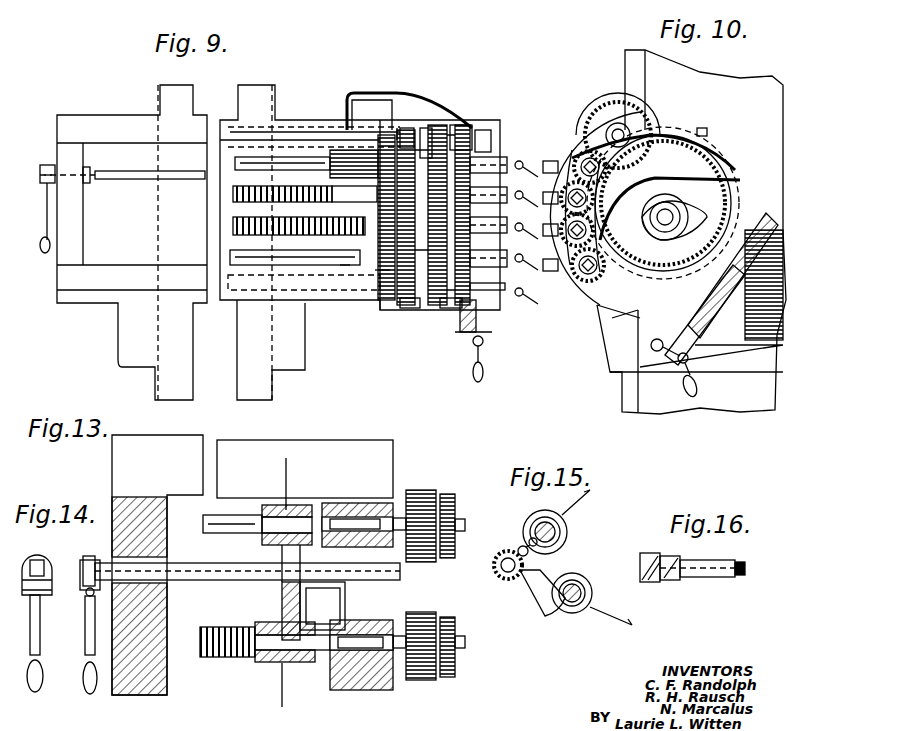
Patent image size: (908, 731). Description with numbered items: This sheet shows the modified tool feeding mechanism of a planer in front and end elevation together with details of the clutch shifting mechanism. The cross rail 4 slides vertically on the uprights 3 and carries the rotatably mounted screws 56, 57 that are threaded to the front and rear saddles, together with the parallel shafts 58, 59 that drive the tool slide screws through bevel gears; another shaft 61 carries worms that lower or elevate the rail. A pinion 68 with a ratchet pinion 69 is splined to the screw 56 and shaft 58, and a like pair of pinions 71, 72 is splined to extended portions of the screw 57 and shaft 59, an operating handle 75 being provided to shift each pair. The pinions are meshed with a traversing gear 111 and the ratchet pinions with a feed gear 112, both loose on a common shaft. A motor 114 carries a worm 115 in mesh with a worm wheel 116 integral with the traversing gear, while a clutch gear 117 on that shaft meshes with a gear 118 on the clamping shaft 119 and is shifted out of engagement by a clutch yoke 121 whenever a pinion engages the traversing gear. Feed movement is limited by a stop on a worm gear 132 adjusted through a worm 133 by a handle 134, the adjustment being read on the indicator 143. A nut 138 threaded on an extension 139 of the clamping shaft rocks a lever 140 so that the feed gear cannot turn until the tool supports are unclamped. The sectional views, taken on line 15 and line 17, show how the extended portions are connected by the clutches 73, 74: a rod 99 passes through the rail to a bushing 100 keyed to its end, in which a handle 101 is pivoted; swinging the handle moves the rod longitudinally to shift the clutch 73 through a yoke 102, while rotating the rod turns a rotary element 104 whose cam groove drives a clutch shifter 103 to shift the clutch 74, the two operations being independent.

In FIG. 10, the upright 3 is at (625, 66).
In FIG. 13, the cross rail 4 is at (300, 440).
In FIG. 15, the section line 15 is at (607, 557).
In FIG. 13, the section line 17 is at (278, 475).
In FIG. 9, the screw 56 is at (233, 222).
In FIG. 9, the screw 57 is at (233, 193).
In FIG. 13, the screw 57 is at (225, 660).
In FIG. 15, the screw 57 is at (592, 593).
In FIG. 9, the shaft 58 is at (230, 256).
In FIG. 9, the shaft 59 is at (290, 162).
In FIG. 13, the shaft 59 is at (208, 526).
In FIG. 15, the shaft 59 is at (567, 535).
In FIG. 9, the shaft 61 is at (228, 282).
In FIG. 10, the pinion 68 is at (567, 158).
In FIG. 9, the ratchet pinion 69 is at (455, 300).
In FIG. 10, the ratchet pinion 69 is at (573, 140).
In FIG. 13, the pinion 71 is at (422, 490).
In FIG. 13, the ratchet pinion 72 is at (447, 495).
In FIG. 9, the clutch 73 is at (335, 207).
In FIG. 13, the clutch 73 is at (302, 665).
In FIG. 15, the clutch 73 is at (572, 614).
In FIG. 9, the clutch 74 is at (350, 160).
In FIG. 13, the clutch 74 is at (300, 507).
In FIG. 15, the clutch 74 is at (530, 522).
In FIG. 9, the operating handle 75 is at (525, 303).
In FIG. 9, the rod 99 is at (230, 173).
In FIG. 13, the rod 99 is at (240, 578).
In FIG. 15, the rod 99 is at (500, 572).
In FIG. 9, the bushing 100 is at (48, 150).
In FIG. 14, the bushing 100 is at (43, 560).
In FIG. 9, the handle 101 is at (40, 240).
In FIG. 13, the handle 101 is at (86, 672).
In FIG. 14, the handle 101 is at (38, 675).
In FIG. 13, the yoke 102 is at (283, 602).
In FIG. 15, the yoke 102 is at (537, 612).
In FIG. 13, the clutch shifter 103 is at (288, 553).
In FIG. 15, the clutch shifter 103 is at (523, 546).
In FIG. 13, the rotary element 104 is at (312, 590).
In FIG. 16, the rotary element 104 is at (655, 565).
In FIG. 9, the traversing gear 111 is at (405, 125).
In FIG. 10, the feed gear 112 is at (682, 135).
In FIG. 10, the motor 114 is at (768, 212).
In FIG. 9, the worm 115 is at (382, 270).
In FIG. 10, the worm 115 is at (625, 318).
In FIG. 9, the worm wheel 116 is at (397, 130).
In FIG. 10, the worm wheel 116 is at (742, 168).
In FIG. 9, the gear 117 is at (345, 270).
In FIG. 10, the gear 117 is at (665, 132).
In FIG. 9, the gear 118 is at (378, 93).
In FIG. 10, the gear 118 is at (597, 108).
In FIG. 9, the clamping shaft 119 is at (300, 125).
In FIG. 9, the clutch yoke 121 is at (410, 305).
In FIG. 10, the clutch yoke 121 is at (702, 130).
In FIG. 10, the worm gear 132 is at (595, 325).
In FIG. 10, the worm 133 is at (705, 322).
In FIG. 9, the handle 134 is at (483, 372).
In FIG. 10, the handle 134 is at (697, 388).
In FIG. 9, the nut 138 is at (458, 125).
In FIG. 9, the extension 139 is at (428, 128).
In FIG. 9, the lever 140 is at (485, 132).
In FIG. 10, the indicator 143 is at (640, 235).